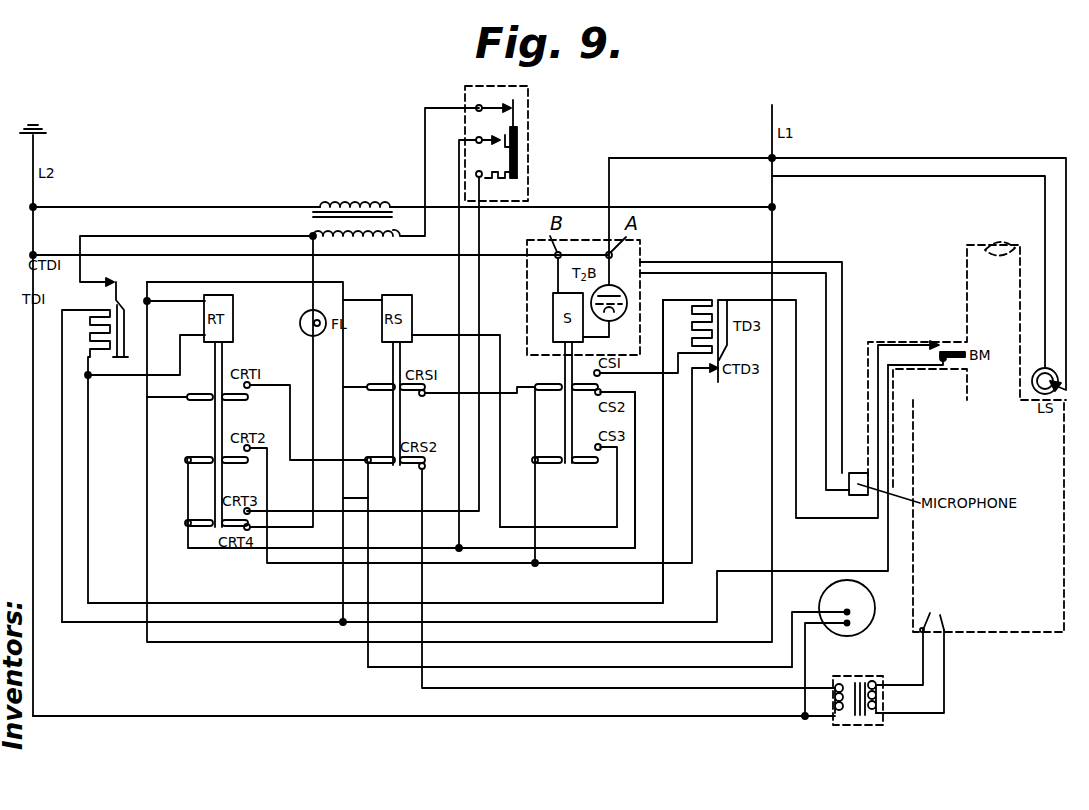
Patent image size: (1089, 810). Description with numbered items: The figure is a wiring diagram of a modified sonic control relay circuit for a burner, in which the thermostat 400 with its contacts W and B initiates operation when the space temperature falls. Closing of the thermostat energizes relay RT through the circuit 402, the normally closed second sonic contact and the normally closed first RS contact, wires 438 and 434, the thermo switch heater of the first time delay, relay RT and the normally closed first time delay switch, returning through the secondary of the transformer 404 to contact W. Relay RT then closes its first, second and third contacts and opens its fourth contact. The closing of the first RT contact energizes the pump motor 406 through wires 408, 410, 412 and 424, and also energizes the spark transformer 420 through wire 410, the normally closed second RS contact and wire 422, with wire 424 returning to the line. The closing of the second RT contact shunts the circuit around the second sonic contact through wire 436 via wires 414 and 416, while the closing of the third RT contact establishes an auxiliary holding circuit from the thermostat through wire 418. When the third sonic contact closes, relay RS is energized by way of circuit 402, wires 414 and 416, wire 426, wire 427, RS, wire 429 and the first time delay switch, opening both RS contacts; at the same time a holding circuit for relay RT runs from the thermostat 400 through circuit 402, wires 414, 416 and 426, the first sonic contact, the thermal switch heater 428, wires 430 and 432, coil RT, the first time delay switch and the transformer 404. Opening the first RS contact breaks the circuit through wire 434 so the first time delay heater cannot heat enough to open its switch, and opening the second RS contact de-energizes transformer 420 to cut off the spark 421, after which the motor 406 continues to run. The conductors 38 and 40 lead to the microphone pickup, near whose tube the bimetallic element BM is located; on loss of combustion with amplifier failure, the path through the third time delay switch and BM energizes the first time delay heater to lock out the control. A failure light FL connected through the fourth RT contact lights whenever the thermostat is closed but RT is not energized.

The conductor to microphone 38 is at (843, 290).
The conductor to microphone 40 is at (827, 328).
The thermostat 400 is at (528, 156).
The circuit 402 is at (458, 275).
The transformer 404 is at (318, 212).
The pump motor 406 is at (880, 593).
The wire 408 is at (280, 643).
The wire 410 is at (289, 412).
The wire 412 is at (645, 661).
The wire 414 is at (312, 545).
The wire 416 is at (303, 567).
The wire 418 is at (480, 300).
The spark transformer 420 is at (834, 697).
The spark 421 is at (946, 617).
The wire 422 is at (567, 685).
The wire 424 is at (352, 716).
The wire 426 is at (538, 525).
The wire 427 is at (500, 390).
The thermal switch heater 428 is at (683, 294).
The wire 429 is at (262, 277).
The wire 430 is at (663, 455).
The wire 432 is at (198, 602).
The wire 434 is at (100, 623).
The wire 436 is at (637, 498).
The wire 438 is at (368, 498).